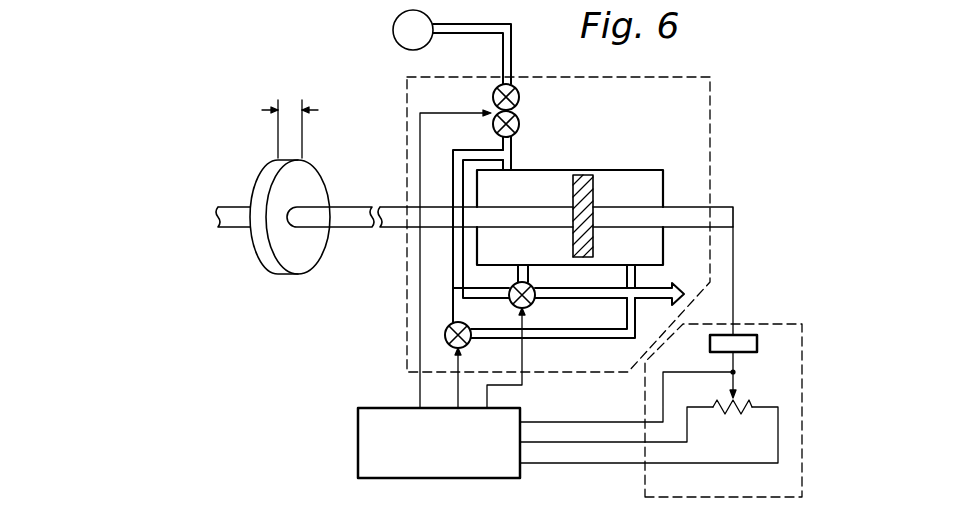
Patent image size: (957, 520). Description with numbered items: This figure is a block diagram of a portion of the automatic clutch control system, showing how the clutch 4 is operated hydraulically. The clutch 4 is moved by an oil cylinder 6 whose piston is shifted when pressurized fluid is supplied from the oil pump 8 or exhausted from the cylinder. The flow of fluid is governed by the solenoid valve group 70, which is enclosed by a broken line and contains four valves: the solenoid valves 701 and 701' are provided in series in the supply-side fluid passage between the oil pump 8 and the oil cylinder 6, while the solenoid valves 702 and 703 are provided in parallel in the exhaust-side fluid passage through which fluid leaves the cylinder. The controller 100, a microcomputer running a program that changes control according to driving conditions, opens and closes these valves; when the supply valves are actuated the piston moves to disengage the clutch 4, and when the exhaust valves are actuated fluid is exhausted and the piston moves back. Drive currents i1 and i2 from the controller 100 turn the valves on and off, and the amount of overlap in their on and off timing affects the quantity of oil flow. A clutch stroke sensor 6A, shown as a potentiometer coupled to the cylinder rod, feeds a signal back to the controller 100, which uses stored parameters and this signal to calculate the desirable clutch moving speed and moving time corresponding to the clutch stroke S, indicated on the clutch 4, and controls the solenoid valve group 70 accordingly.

The clutch 4 is at (290, 276).
The oil cylinder 6 is at (572, 166).
The solenoid valve group 70 is at (712, 127).
The clutch stroke sensor 6A is at (742, 324).
The oil pump 8 is at (399, 41).
The solenoid valve 701' is at (542, 97).
The solenoid valve 701 is at (538, 140).
The solenoid valve 702 is at (467, 346).
The solenoid valve 703 is at (534, 306).
The controller 100 is at (356, 453).
The clutch stroke S is at (290, 128).
The drive current i1 is at (455, 380).
The drive current i2 is at (527, 362).